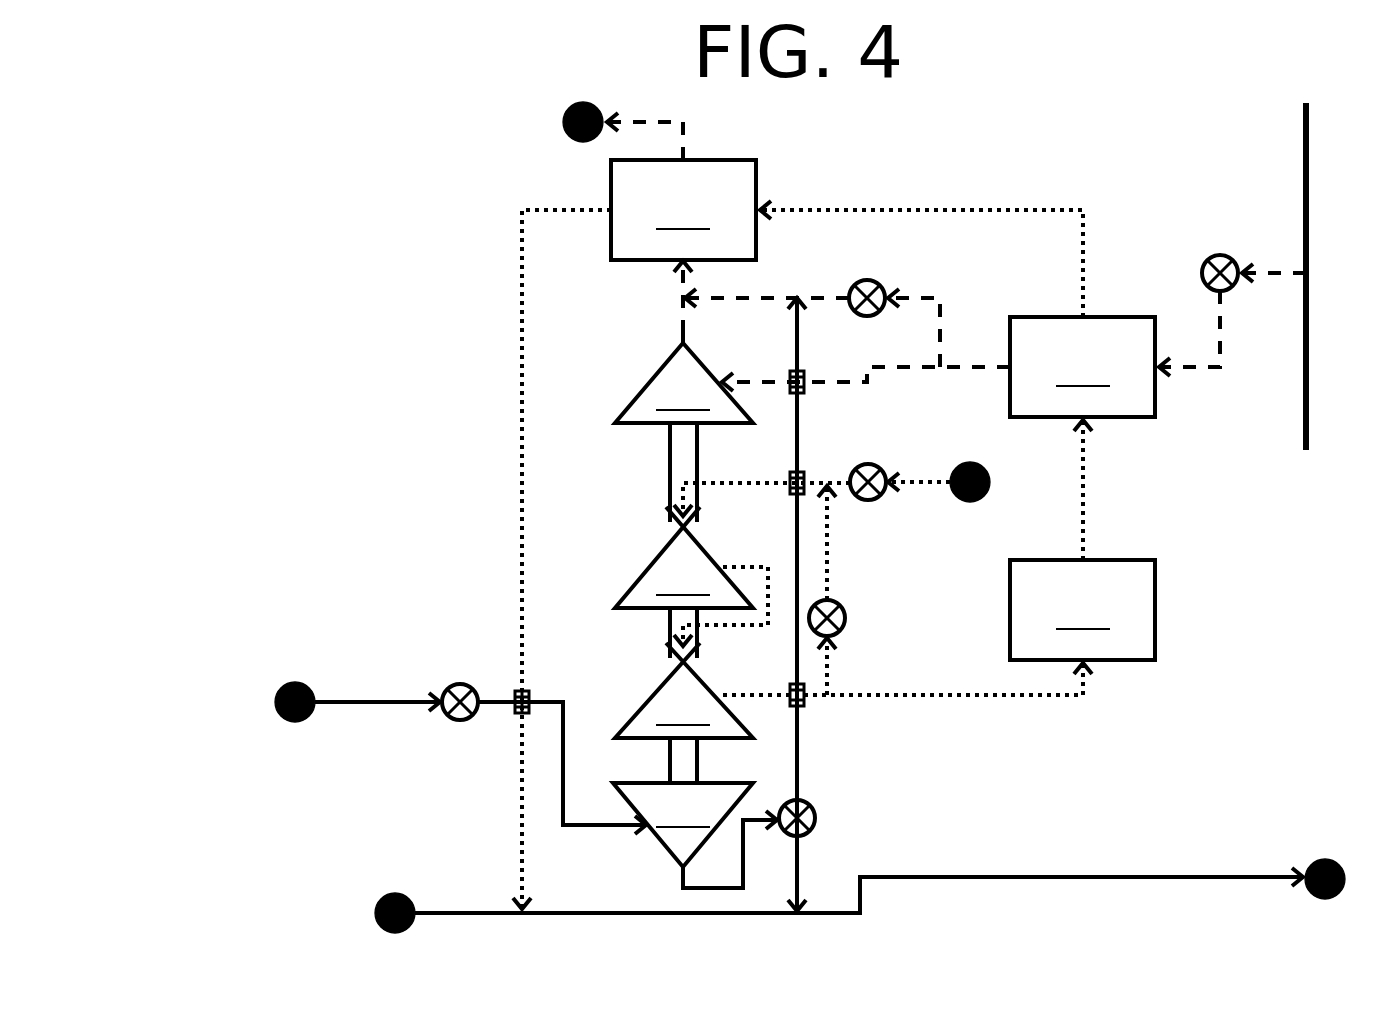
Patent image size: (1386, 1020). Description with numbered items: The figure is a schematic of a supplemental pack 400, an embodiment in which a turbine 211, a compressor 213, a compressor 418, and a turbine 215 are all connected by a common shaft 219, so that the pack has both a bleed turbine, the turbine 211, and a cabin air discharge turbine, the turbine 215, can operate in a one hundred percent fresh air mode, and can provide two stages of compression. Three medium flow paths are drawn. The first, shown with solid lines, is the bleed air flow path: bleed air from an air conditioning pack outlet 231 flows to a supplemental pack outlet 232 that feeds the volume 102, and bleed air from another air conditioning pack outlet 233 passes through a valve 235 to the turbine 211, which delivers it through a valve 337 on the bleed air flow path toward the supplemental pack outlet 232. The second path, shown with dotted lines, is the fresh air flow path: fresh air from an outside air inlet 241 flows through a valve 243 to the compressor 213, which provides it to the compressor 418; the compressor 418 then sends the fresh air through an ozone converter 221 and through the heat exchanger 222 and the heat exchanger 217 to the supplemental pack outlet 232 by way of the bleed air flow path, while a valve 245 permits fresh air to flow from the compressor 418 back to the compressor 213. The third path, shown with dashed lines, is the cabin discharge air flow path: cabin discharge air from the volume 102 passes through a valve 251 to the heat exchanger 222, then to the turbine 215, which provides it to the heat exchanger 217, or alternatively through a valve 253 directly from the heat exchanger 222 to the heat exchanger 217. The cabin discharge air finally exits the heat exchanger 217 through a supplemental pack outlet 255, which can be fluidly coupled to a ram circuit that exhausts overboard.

The supplemental pack 400 is at (336, 131).
The volume 102 is at (1302, 133).
The heat exchanger 217 is at (683, 210).
The heat exchanger 222 is at (1082, 367).
The ozone converter 221 is at (1082, 610).
The turbine 215 is at (684, 372).
The compressor 213 is at (684, 557).
The compressor 418 is at (684, 690).
The turbine 211 is at (683, 825).
The shaft 219 is at (668, 488).
The supplemental pack outlet 255 is at (569, 110).
The outside air inlet 241 is at (955, 468).
The air conditioning pack outlet 233 is at (282, 688).
The air conditioning pack outlet 231 is at (378, 902).
The supplemental pack outlet 232 is at (1310, 866).
The valve 253 is at (859, 283).
The valve 251 is at (1210, 259).
The valve 243 is at (856, 469).
The valve 245 is at (843, 612).
The valve 235 is at (447, 688).
The valve 337 is at (812, 809).